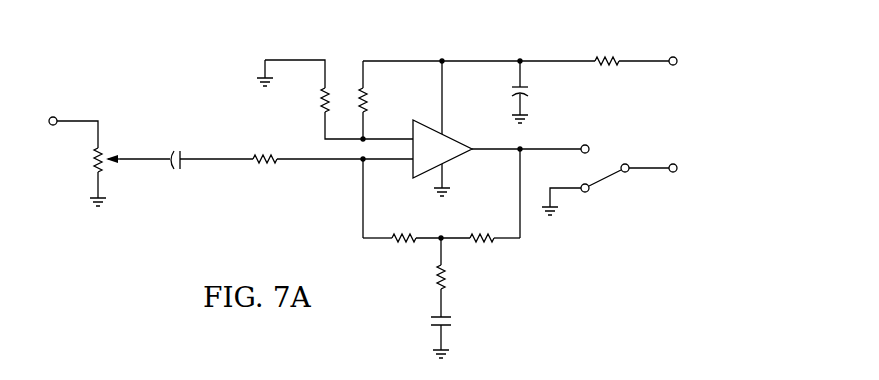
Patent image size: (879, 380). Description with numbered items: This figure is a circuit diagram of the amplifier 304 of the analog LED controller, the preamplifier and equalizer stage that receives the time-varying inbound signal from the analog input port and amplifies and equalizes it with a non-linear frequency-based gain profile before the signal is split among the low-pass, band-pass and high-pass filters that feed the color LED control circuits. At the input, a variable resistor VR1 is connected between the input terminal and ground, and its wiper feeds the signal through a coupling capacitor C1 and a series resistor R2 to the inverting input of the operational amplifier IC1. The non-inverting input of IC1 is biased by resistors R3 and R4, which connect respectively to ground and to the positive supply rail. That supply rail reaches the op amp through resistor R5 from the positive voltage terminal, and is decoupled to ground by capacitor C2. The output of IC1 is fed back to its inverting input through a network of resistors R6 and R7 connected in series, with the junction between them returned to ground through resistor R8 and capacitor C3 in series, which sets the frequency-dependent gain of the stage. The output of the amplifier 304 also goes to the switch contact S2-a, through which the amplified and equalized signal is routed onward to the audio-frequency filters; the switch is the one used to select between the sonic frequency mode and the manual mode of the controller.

The amplifier 304 is at (172, 69).
The variable resistor (volume control) VR1 is at (84, 161).
The input coupling capacitor C1 is at (186, 150).
The input resistor R2 is at (333, 150).
The bias resistor R3 is at (335, 99).
The bias resistor R4 is at (376, 101).
The operational amplifier IC1 is at (420, 149).
The supply decoupling capacitor C2 is at (531, 92).
The supply resistor R5 is at (662, 53).
The output switch S2-a is at (669, 171).
The feedback resistor R6 is at (416, 228).
The feedback resistor R7 is at (479, 228).
The gain setting resistor R8 is at (454, 277).
The gain setting capacitor C3 is at (454, 336).